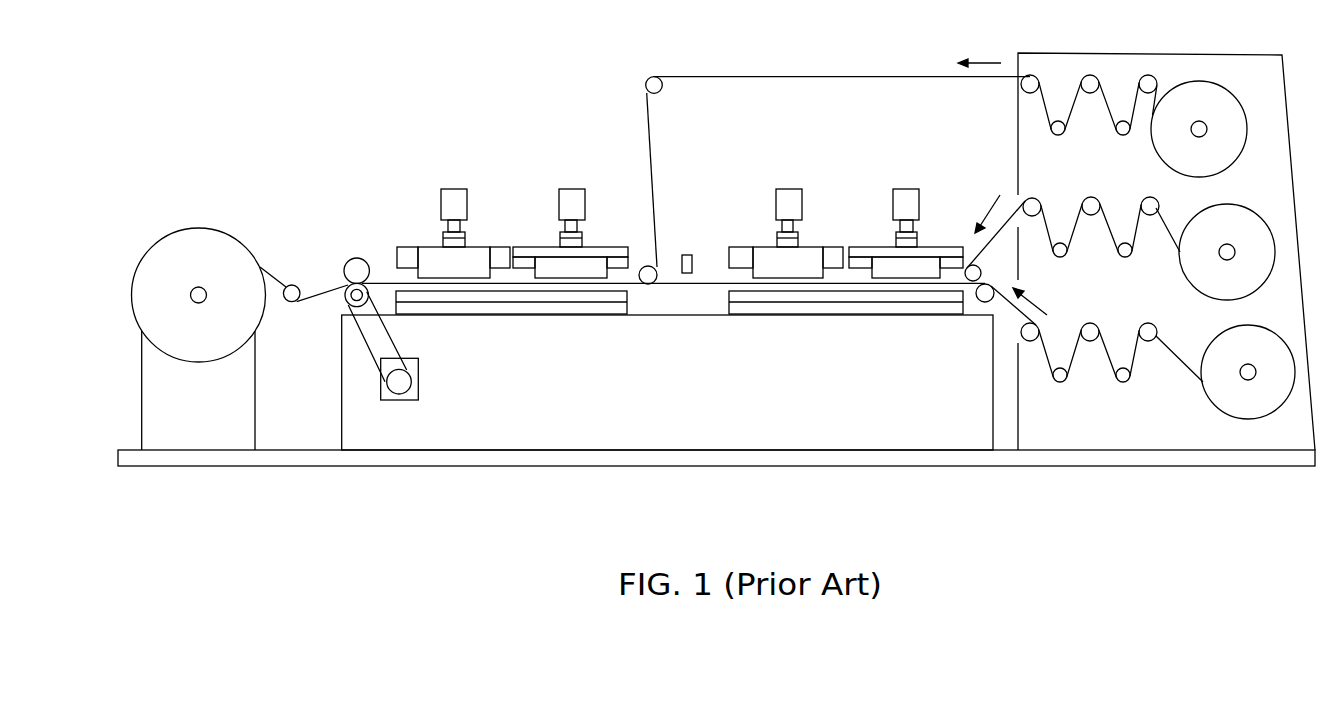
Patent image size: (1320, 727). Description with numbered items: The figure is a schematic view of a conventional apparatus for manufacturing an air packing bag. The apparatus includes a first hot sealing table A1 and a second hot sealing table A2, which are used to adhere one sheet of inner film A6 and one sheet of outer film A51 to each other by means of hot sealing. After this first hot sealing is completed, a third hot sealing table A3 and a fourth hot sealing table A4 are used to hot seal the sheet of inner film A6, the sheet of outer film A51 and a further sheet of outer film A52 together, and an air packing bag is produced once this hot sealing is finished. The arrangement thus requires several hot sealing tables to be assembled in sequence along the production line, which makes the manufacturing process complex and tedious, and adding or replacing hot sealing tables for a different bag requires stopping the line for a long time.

The first hot sealing table A1 is at (906, 190).
The second hot sealing table A2 is at (787, 190).
The third hot sealing table A3 is at (570, 190).
The fourth hot sealing table A4 is at (452, 190).
The outer film A51 is at (1103, 333).
The outer film A52 is at (1037, 80).
The inner film A6 is at (1102, 207).